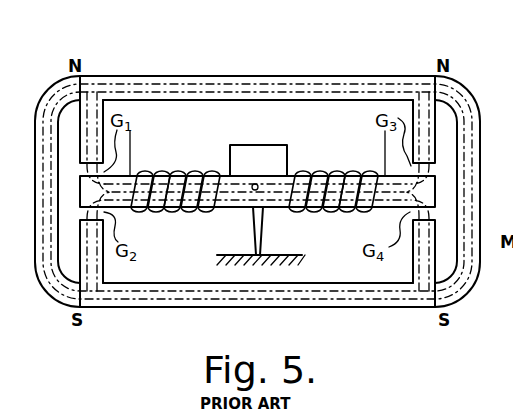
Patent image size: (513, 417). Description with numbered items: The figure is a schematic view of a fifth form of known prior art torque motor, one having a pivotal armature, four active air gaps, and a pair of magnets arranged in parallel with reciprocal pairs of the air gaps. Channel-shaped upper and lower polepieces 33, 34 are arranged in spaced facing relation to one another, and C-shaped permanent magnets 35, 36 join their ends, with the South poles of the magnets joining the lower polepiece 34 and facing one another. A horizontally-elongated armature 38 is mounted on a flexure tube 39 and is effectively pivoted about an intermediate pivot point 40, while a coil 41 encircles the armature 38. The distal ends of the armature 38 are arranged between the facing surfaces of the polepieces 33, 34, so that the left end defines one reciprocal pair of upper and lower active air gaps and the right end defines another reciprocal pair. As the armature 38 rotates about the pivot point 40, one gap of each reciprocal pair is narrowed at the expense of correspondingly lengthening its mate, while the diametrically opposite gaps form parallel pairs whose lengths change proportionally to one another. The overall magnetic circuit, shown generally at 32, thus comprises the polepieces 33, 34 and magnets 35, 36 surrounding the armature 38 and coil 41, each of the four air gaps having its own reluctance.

The permanent magnet assembly 32 is at (262, 182).
The upper polepiece 33 is at (195, 76).
The lower polepiece 34 is at (350, 307).
The C-shaped permanent magnet 35 is at (35, 212).
The C-shaped permanent magnet 36 is at (480, 190).
The armature 38 is at (292, 172).
The flexure tube 39 is at (267, 229).
The pivot point 40 is at (252, 189).
The coil 41 is at (200, 173).